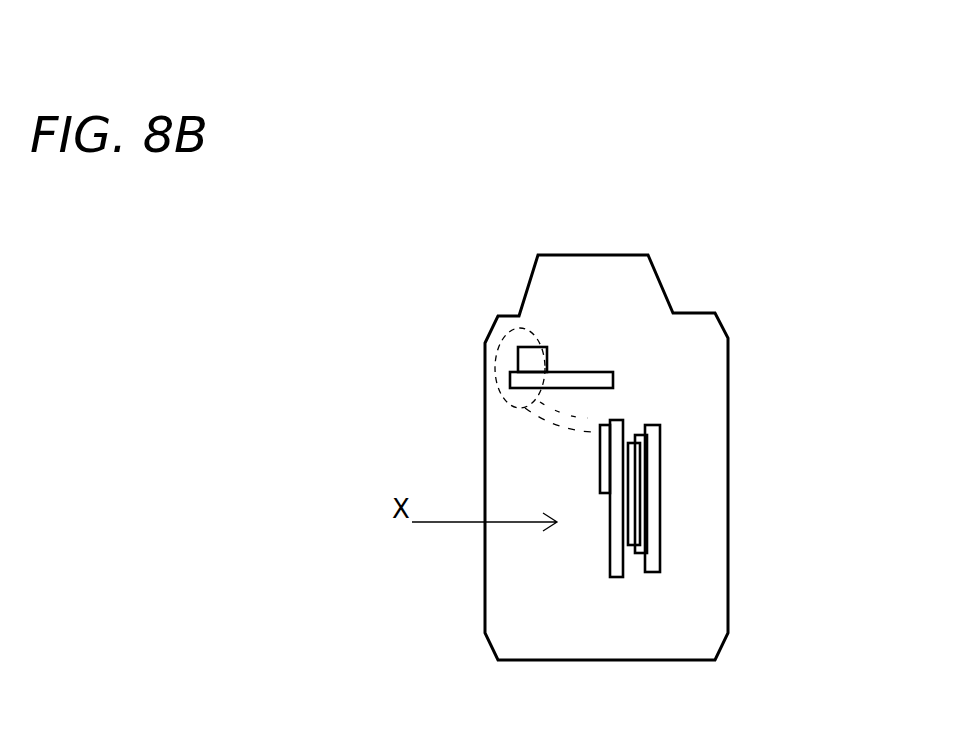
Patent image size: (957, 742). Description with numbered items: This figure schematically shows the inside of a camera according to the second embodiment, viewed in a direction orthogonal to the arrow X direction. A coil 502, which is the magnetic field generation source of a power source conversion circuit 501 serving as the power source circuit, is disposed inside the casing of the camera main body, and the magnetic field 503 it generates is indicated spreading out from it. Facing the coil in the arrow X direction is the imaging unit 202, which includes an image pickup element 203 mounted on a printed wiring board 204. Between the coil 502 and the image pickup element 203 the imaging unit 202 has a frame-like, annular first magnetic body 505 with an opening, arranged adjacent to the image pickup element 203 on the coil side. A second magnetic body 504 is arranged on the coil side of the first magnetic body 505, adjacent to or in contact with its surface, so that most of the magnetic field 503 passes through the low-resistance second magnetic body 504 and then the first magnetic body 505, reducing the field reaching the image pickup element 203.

The imaging unit 202 is at (643, 590).
The image pickup element 203 is at (637, 473).
The printed wiring board 204 is at (662, 505).
The power source conversion circuit 501 is at (585, 372).
The coil 502 is at (547, 348).
The magnetic field 503 is at (495, 362).
The second magnetic body 504 is at (605, 425).
The first magnetic body 505 is at (620, 418).